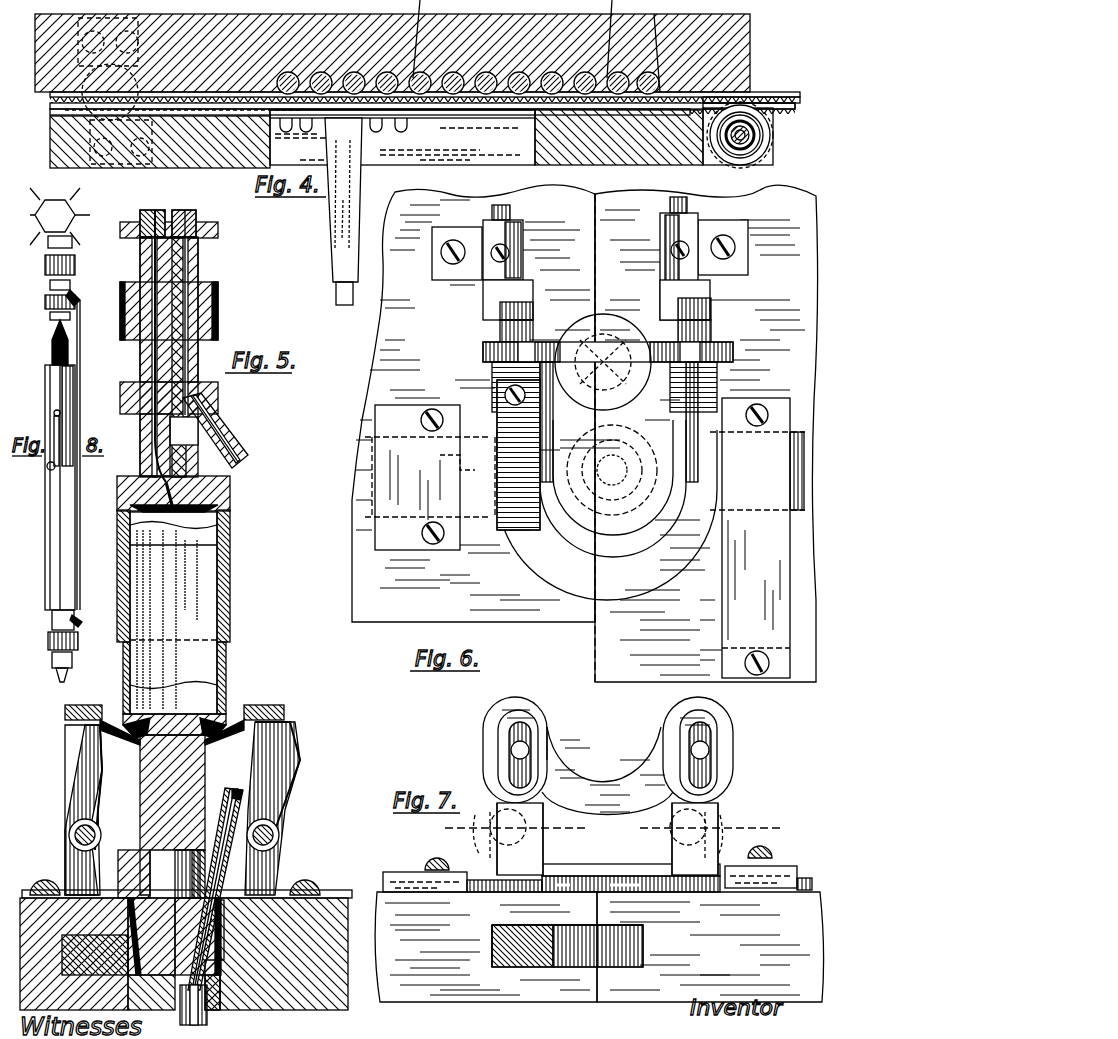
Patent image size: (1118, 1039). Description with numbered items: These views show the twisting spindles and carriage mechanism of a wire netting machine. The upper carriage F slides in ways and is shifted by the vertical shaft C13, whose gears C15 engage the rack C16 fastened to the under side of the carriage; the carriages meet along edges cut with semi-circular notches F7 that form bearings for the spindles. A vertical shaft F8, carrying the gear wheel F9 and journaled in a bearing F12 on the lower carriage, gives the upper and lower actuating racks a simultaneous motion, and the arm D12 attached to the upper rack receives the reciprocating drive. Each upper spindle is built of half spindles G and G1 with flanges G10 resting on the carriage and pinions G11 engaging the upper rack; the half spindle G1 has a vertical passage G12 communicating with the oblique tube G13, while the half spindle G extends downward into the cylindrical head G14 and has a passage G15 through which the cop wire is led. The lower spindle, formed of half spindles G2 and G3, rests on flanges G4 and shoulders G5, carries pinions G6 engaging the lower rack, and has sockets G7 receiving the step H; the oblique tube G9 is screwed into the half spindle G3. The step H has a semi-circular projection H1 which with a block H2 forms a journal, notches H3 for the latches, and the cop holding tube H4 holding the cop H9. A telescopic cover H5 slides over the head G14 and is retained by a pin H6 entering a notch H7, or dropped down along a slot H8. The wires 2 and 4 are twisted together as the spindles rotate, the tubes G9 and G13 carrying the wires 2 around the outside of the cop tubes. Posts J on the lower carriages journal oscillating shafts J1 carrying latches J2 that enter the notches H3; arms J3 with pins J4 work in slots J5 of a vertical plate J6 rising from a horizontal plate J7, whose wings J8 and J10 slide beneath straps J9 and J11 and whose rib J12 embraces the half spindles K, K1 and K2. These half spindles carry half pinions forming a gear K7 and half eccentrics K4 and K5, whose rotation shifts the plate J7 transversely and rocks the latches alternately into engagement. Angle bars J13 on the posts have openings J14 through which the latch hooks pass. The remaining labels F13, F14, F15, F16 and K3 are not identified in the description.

In FIG. 4, the shaft C13 is at (70, 83).
In FIG. 4, the gears C15 is at (52, 108).
In FIG. 4, the rack C16 is at (90, 141).
In FIG. 4, the sliding bar or carriage F is at (594, 137).
In FIG. 4, the semi-circular notches F7 is at (288, 78).
In FIG. 4, the vertical shaft F8 is at (728, 146).
In FIG. 4, the gear wheel F9 is at (762, 138).
In FIG. 5, the bearing F12 is at (42, 920).
In FIG. 6, the bearing F12 is at (473, 403).
In FIG. 7, the bearing F12 is at (486, 947).
In FIG. 5, the right frame plate F13 is at (303, 995).
In FIG. 6, the right frame plate F13 is at (706, 433).
In FIG. 7, the right frame plate F13 is at (710, 947).
In FIG. 4, the guide bar F14 is at (755, 97).
In FIG. 7, the guide bar F14 is at (500, 928).
In FIG. 4, the rack guide F15 is at (783, 97).
In FIG. 5, the frame recess F16 is at (82, 950).
In FIG. 7, the frame recess F16 is at (510, 945).
In FIG. 5, the half spindle G is at (172, 313).
In FIG. 5, the half spindle G1 is at (218, 305).
In FIG. 5, the half spindle G2 is at (128, 852).
In FIG. 5, the half spindle G3 is at (226, 900).
In FIG. 5, the flanges G4 is at (149, 922).
In FIG. 5, the shoulders G5 is at (242, 962).
In FIG. 5, the pinions G6 is at (224, 936).
In FIG. 5, the sockets G7 is at (178, 905).
In FIG. 8, the oblique tube G9 is at (78, 624).
In FIG. 5, the oblique tube G9 is at (240, 795).
In FIG. 4, the flanges G10 is at (520, 90).
In FIG. 5, the flanges G10 is at (124, 224).
In FIG. 4, the pinions G11 is at (440, 92).
In FIG. 5, the pinions G11 is at (120, 292).
In FIG. 5, the passage G12 is at (186, 352).
In FIG. 8, the oblique tube G13 is at (75, 300).
In FIG. 5, the oblique tube G13 is at (232, 438).
In FIG. 5, the cylindrical head G14 is at (212, 490).
In FIG. 5, the passage G15 is at (152, 353).
In FIG. 5, the step H is at (172, 815).
In FIG. 5, the semi-circular projection H1 is at (177, 874).
In FIG. 5, the semi-circular block H2 is at (191, 874).
In FIG. 5, the notches H3 is at (228, 720).
In FIG. 8, the cop holding tube H4 is at (55, 527).
In FIG. 5, the cop holding tube H4 is at (262, 672).
In FIG. 8, the sliding telescopic cover H5 is at (55, 393).
In FIG. 5, the sliding telescopic cover H5 is at (280, 552).
In FIG. 8, the pin H6 is at (53, 415).
In FIG. 8, the notch H7 is at (48, 468).
In FIG. 8, the slot H8 is at (60, 440).
In FIG. 8, the cop H9 is at (52, 350).
In FIG. 5, the posts J is at (65, 880).
In FIG. 6, the posts J is at (445, 265).
In FIG. 5, the oscillating shafts J1 is at (72, 836).
In FIG. 6, the oscillating shafts J1 is at (508, 212).
In FIG. 7, the oscillating shafts J1 is at (766, 808).
In FIG. 5, the latches J2 is at (80, 776).
In FIG. 6, the arms J3 is at (497, 310).
In FIG. 7, the arms J3 is at (520, 778).
In FIG. 6, the pins J4 is at (483, 350).
In FIG. 7, the pins J4 is at (528, 750).
In FIG. 7, the slots J5 is at (525, 728).
In FIG. 6, the vertical plate J6 is at (733, 352).
In FIG. 7, the vertical plate J6 is at (548, 760).
In FIG. 6, the horizontal plate J7 is at (517, 455).
In FIG. 6, the wing J8 is at (790, 490).
In FIG. 7, the wing J8 is at (805, 878).
In FIG. 6, the strap J9 is at (756, 597).
In FIG. 7, the strap J9 is at (738, 872).
In FIG. 6, the wing J10 is at (457, 457).
In FIG. 7, the wing J10 is at (475, 880).
In FIG. 6, the strap J11 is at (430, 477).
In FIG. 7, the strap J11 is at (405, 880).
In FIG. 6, the vertical rib J12 is at (590, 482).
In FIG. 7, the vertical rib J12 is at (572, 864).
In FIG. 5, the angle bars J13 is at (68, 716).
In FIG. 6, the angle bars J13 is at (510, 236).
In FIG. 5, the openings J14 is at (100, 728).
In FIG. 6, the openings J14 is at (700, 470).
In FIG. 6, the half spindle K is at (598, 345).
In FIG. 6, the half spindle K1 is at (610, 470).
In FIG. 6, the half spindle K2 is at (592, 372).
In FIG. 6, the cam shaft K3 is at (640, 470).
In FIG. 6, the half eccentric K4 is at (606, 398).
In FIG. 6, the half eccentric K5 is at (578, 330).
In FIG. 7, the gear K7 is at (625, 948).
In FIG. 4, the arm D12 is at (332, 233).
In FIG. 8, the wires 2 is at (72, 238).
In FIG. 8, the wire 4 is at (38, 320).